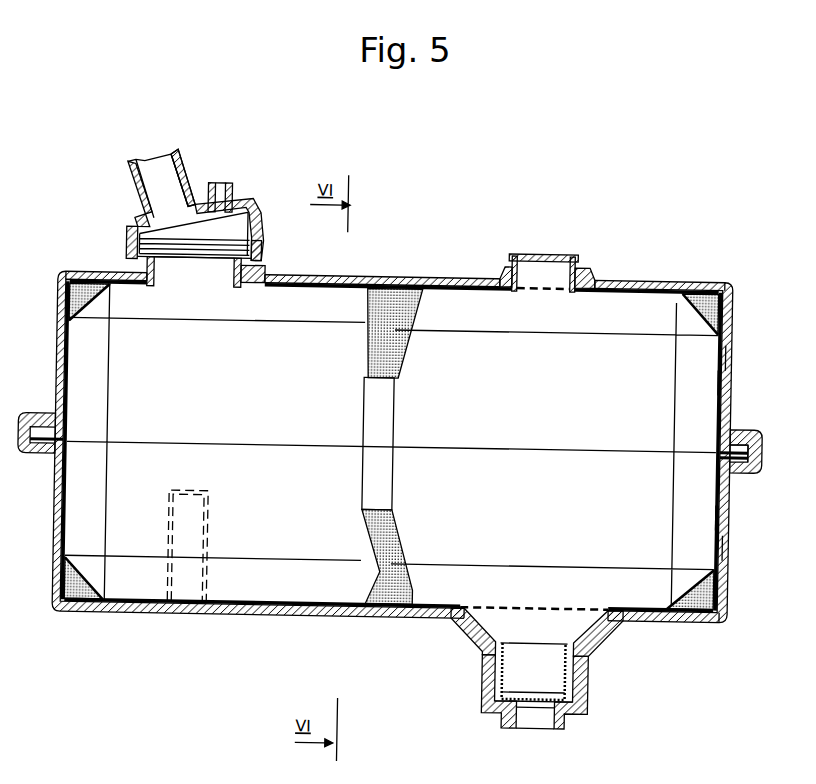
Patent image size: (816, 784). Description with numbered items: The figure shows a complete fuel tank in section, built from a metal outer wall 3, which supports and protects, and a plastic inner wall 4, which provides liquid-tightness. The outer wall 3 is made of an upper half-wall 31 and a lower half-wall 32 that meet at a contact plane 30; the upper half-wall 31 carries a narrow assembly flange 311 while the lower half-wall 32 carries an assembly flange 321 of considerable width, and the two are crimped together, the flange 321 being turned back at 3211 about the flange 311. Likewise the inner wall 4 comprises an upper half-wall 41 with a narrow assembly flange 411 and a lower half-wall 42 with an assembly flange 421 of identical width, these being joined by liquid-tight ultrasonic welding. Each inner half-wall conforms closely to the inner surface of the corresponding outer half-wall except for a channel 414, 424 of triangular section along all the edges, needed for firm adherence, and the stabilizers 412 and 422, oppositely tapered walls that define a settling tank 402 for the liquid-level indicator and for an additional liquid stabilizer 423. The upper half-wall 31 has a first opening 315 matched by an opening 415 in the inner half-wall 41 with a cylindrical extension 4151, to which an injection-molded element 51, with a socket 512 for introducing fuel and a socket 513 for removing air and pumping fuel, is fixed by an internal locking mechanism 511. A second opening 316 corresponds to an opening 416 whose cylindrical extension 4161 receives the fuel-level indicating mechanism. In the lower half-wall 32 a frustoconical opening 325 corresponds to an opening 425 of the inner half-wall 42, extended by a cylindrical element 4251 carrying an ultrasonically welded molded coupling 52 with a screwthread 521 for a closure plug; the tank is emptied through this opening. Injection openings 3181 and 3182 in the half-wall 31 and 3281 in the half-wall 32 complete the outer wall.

The metal outer wall 3 is at (715, 543).
The contact plane 30 is at (454, 448).
The upper half-wall 31 is at (723, 353).
The lower half-wall 32 is at (719, 537).
The narrow assembly flange 311 is at (727, 442).
The assembly flange 321 is at (743, 458).
The turned-back portion 3211 is at (737, 428).
The first opening 315 is at (254, 272).
The second opening 316 is at (578, 276).
The opening 325 is at (596, 633).
The injection opening 3181 is at (706, 288).
The injection opening 3182 is at (84, 277).
The injection opening 3281 is at (707, 615).
The plastic inner wall 4 is at (715, 519).
The upper half-wall 41 is at (713, 377).
The lower half-wall 42 is at (718, 510).
The settling tank 402 is at (513, 420).
The narrow assembly flange 411 is at (720, 447).
The assembly flange 421 is at (728, 455).
The stabilizer 412 is at (388, 315).
The stabilizer 422 is at (397, 579).
The channel 414 is at (56, 277).
The channel 424 is at (81, 592).
The opening 415 is at (229, 282).
The cylindrical extension 4151 is at (259, 244).
The opening 416 is at (567, 291).
The cylindrical extension 4161 is at (569, 251).
The additional liquid stabilizer 423 is at (193, 536).
The opening 425 is at (566, 660).
The cylindrical element 4251 is at (572, 673).
The molded element 51 is at (249, 244).
The internal locking mechanism 511 is at (216, 251).
The socket 512 is at (158, 171).
The socket 513 is at (218, 194).
The molded coupling 52 is at (582, 711).
The screwthread 521 is at (554, 716).